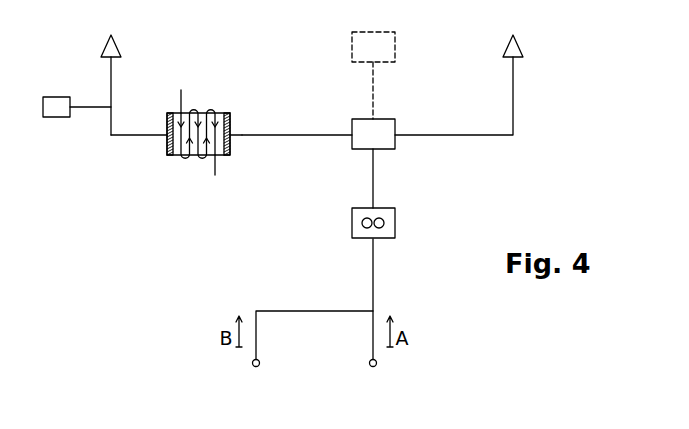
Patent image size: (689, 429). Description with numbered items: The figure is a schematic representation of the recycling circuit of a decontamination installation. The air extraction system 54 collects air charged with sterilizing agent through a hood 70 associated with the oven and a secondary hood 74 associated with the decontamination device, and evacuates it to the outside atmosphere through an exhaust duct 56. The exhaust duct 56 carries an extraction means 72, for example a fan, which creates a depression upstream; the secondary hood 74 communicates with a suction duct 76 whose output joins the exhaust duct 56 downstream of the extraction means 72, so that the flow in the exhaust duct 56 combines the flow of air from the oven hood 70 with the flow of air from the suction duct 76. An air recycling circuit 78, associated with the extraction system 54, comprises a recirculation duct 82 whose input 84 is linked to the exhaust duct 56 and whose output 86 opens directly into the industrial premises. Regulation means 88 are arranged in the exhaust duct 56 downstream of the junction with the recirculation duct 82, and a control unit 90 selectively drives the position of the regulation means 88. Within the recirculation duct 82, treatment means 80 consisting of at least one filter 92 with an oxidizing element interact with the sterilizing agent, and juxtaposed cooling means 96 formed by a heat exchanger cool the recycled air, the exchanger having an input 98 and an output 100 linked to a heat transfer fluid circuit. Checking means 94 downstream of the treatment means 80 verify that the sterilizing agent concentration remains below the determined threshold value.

The air extraction system 54 is at (440, 316).
The exhaust duct 56 is at (488, 134).
The second extraction means 70 is at (377, 364).
The extraction means 72 is at (384, 223).
The first extraction means 74 is at (252, 364).
The suction duct 76 is at (292, 310).
The air recycling circuit 78 is at (185, 160).
The treatment means 80 is at (198, 128).
The recirculation duct 82 is at (306, 134).
The input 84 is at (232, 139).
The output 86 is at (166, 128).
The regulation means 88 is at (384, 126).
The control unit 90 is at (373, 75).
The filter 92 is at (232, 120).
The checking means 94 is at (55, 113).
The cooling means 96 is at (203, 160).
The input 98 is at (181, 91).
The output 100 is at (216, 166).